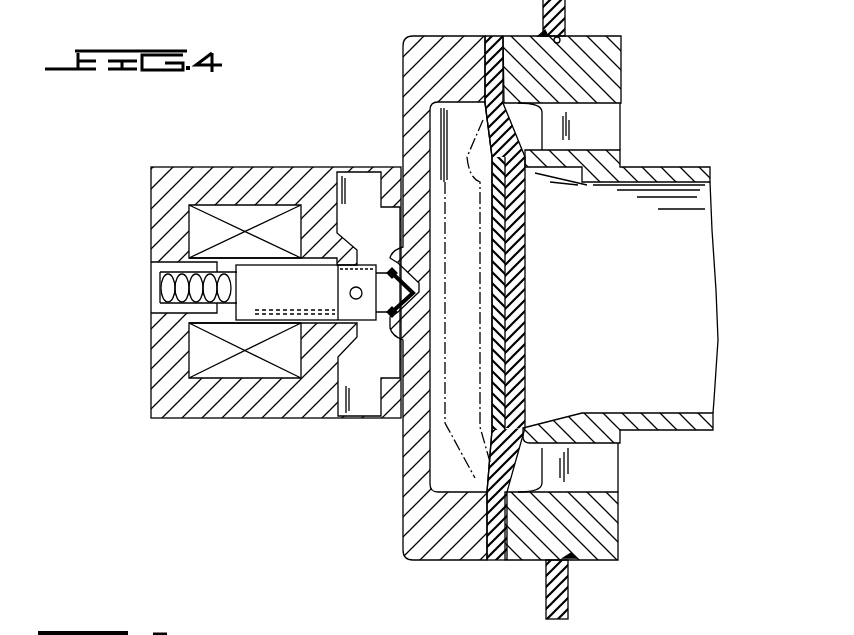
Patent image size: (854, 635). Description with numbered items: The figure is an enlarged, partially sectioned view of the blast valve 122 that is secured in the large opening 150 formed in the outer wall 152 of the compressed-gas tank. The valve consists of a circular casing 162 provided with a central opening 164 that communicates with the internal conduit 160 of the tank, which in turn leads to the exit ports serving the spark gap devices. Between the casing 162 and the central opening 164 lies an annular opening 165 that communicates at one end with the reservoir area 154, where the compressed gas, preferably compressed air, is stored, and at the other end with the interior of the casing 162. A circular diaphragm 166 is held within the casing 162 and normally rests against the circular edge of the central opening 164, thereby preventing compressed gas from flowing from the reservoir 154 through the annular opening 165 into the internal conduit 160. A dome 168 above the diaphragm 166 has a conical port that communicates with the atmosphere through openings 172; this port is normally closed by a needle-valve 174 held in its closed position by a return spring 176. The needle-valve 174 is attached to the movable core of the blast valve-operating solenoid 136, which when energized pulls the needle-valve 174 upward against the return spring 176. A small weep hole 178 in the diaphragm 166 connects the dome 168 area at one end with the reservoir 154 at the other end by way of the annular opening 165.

The blast valve 122 is at (401, 52).
The blast valve-operating solenoid 136 is at (233, 212).
The large opening 150 is at (567, 36).
The outer wall 152 is at (544, 5).
The reservoir area 154 is at (694, 83).
The internal conduit 160 is at (656, 273).
The circular casing 162 is at (476, 22).
The central opening 164 is at (576, 218).
The annular opening 165 is at (592, 127).
The diaphragm 166 is at (527, 295).
The dome 168 is at (447, 110).
The openings 172 is at (373, 419).
The needle-valve 174 is at (380, 265).
The return spring 176 is at (153, 327).
The weep hole 178 is at (483, 123).